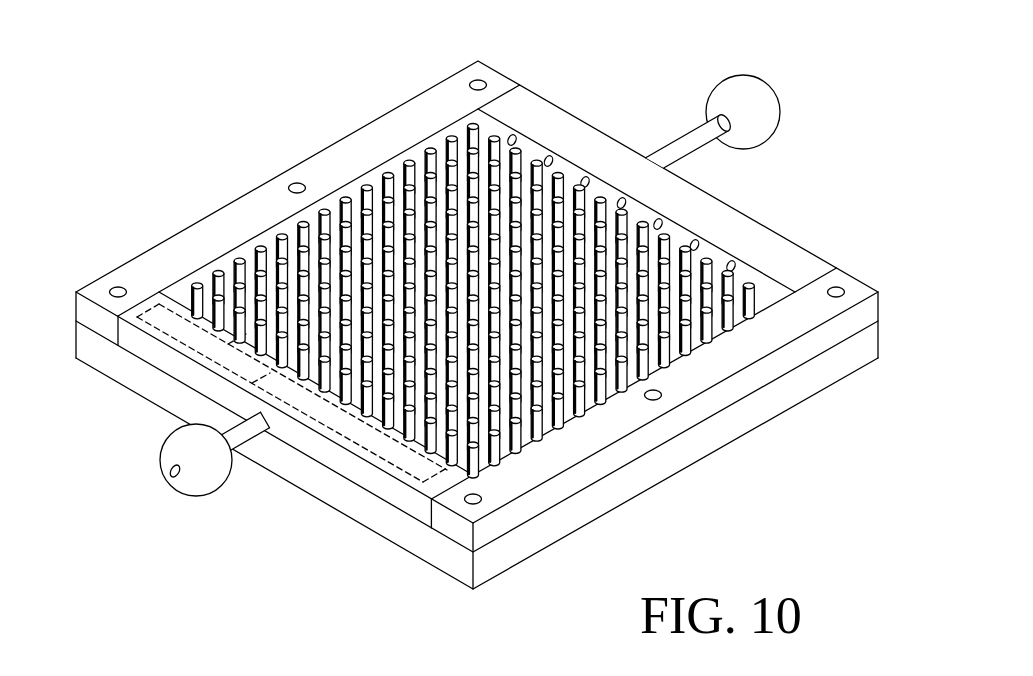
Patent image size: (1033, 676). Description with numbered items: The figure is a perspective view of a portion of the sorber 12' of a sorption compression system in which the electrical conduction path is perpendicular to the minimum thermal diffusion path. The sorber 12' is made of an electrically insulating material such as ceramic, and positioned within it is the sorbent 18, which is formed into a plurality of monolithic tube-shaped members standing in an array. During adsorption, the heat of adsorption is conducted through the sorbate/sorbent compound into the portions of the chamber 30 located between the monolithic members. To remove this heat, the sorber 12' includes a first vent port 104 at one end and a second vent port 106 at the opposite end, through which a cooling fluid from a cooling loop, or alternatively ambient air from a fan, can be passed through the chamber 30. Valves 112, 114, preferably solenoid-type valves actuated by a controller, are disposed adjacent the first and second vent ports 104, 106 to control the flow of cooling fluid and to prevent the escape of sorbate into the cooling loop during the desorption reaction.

The sorber 12' is at (477, 322).
The chamber 30 is at (486, 132).
The first vent port 104 is at (616, 205).
The valve 112 is at (776, 92).
The sorbent 18 is at (734, 252).
The second vent port 106 is at (262, 406).
The valve 114 is at (204, 497).